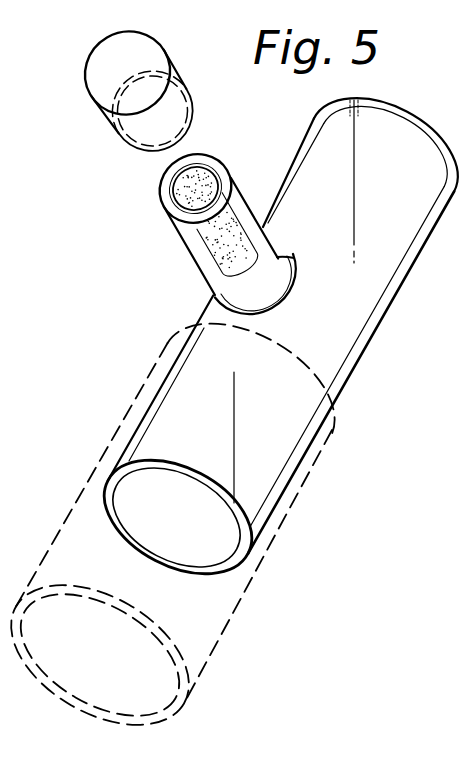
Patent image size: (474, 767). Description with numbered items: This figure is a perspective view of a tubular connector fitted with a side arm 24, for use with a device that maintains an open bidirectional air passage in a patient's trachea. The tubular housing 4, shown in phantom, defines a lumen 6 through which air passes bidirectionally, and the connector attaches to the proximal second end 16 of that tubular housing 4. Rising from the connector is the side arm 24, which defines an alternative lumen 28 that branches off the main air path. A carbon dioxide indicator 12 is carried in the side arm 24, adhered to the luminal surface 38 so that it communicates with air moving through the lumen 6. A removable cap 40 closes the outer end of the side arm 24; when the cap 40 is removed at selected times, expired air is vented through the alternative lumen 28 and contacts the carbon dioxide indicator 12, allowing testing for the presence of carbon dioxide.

The tubular housing 4 is at (213, 539).
The lumen 6 is at (103, 654).
The carbon dioxide indicator 12 is at (198, 178).
The second end 16 is at (339, 424).
The side arm 24 is at (164, 207).
The alternative lumen 28 is at (275, 302).
The luminal surface 38 is at (208, 242).
The removable cap 40 is at (87, 85).